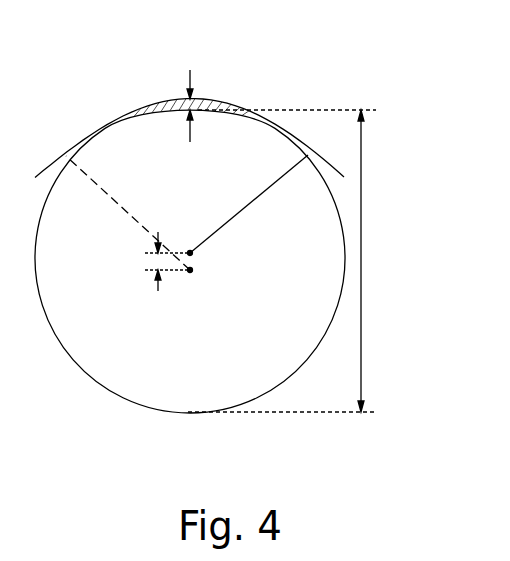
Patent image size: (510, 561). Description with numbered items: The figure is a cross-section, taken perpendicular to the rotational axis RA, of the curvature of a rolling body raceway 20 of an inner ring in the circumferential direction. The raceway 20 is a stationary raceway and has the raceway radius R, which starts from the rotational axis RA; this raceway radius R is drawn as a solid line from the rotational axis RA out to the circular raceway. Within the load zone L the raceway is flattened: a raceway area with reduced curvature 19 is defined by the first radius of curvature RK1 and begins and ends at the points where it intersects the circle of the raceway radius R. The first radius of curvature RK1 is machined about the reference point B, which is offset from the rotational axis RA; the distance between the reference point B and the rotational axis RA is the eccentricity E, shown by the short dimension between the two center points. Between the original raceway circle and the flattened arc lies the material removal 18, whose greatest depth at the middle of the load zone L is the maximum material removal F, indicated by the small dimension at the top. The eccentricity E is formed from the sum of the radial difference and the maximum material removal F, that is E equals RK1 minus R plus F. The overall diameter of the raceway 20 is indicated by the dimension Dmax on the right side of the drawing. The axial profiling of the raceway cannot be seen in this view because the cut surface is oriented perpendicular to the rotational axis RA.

The material removal 18 is at (217, 101).
The raceway area with reduced curvature 19 is at (164, 122).
The rolling body raceway 20 is at (257, 403).
The load zone L is at (152, 89).
The maximum material removal F is at (198, 113).
The maximum diameter Dmax is at (305, 261).
The raceway radius R is at (268, 190).
The first radius of curvature in the circumferential direction RK1 is at (143, 227).
The eccentricity E is at (167, 248).
The rotational axis RA is at (195, 257).
The reference point B is at (193, 274).